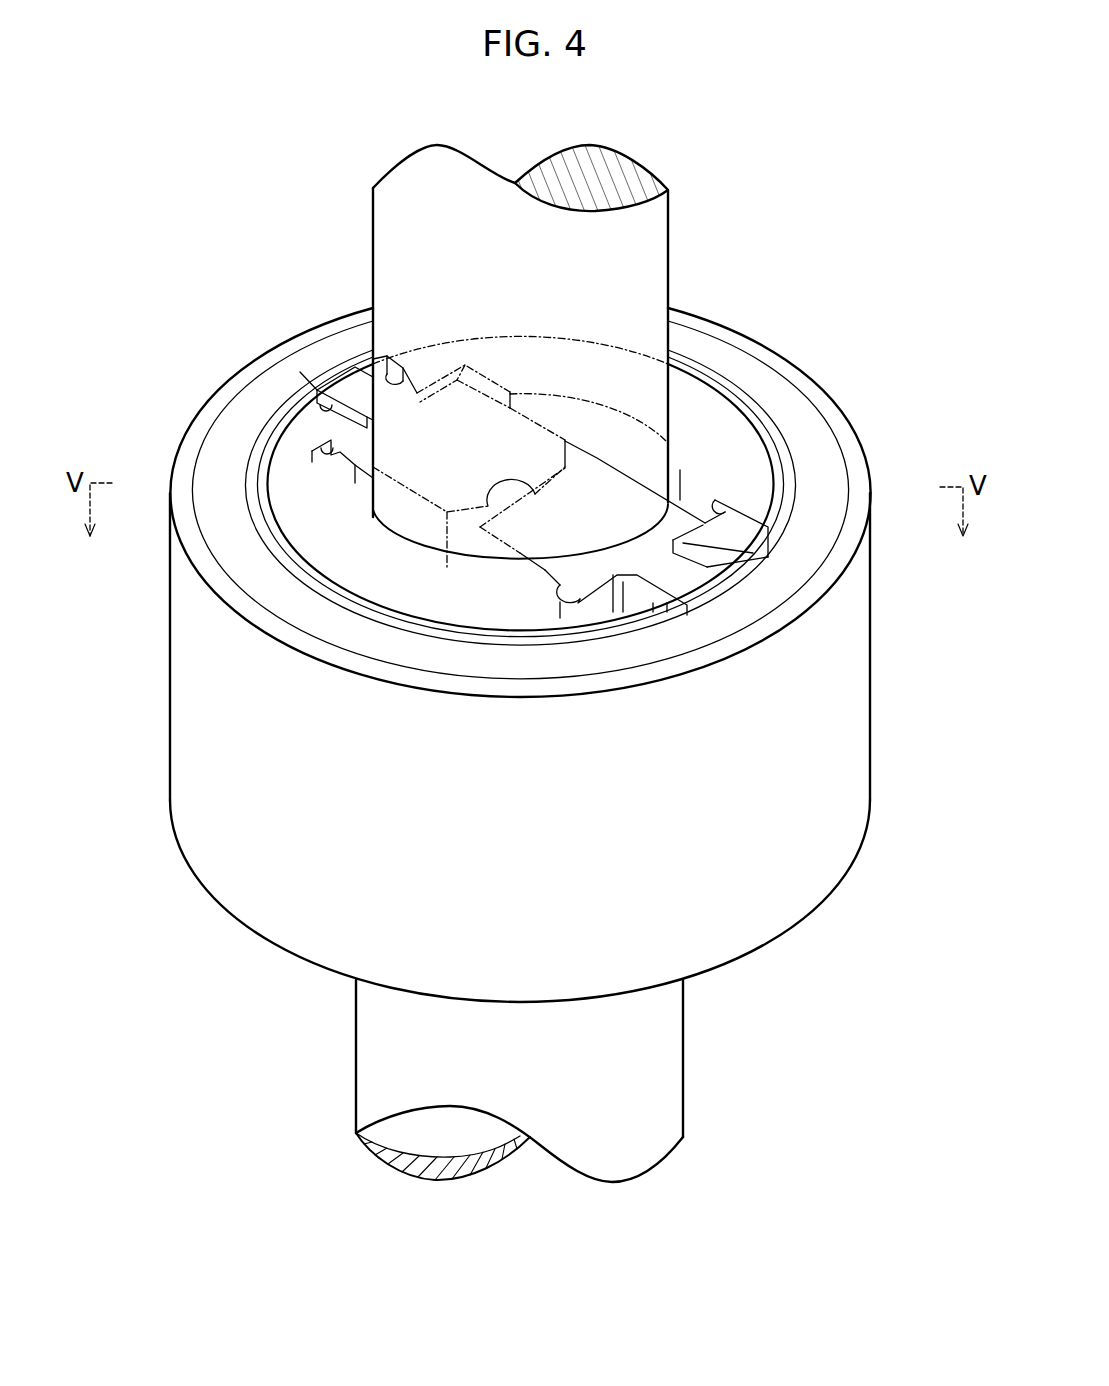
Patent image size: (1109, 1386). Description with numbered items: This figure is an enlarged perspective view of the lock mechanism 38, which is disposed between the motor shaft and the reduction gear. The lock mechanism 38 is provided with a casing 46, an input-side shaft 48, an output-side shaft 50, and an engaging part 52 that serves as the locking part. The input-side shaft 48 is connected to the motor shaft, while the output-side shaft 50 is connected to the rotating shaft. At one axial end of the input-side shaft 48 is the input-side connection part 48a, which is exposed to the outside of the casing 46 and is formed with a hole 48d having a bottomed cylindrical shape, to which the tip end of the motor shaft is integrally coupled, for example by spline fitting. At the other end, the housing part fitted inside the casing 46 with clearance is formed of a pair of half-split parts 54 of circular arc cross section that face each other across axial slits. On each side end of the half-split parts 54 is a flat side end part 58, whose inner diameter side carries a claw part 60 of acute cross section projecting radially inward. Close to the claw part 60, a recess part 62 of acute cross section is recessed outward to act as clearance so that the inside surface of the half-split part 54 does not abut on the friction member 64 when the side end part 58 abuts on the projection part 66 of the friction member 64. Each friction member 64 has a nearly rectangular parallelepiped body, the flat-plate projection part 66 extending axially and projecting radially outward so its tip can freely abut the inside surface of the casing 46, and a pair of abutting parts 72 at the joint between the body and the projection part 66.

The lock mechanism 38 is at (807, 222).
The casing 46 is at (872, 688).
The input-side shaft 48 is at (712, 1030).
The input-side connection part 48a is at (687, 1081).
The hole 48d is at (443, 1133).
The output-side shaft 50 is at (683, 257).
The engaging part 52 is at (690, 442).
The half-split part 54 is at (688, 405).
The side end part 58 is at (388, 357).
The claw part 60 is at (412, 392).
The recess part 62 is at (327, 469).
The friction member 64 is at (357, 510).
The projection part 66 is at (318, 388).
The abutting part 72 is at (313, 457).